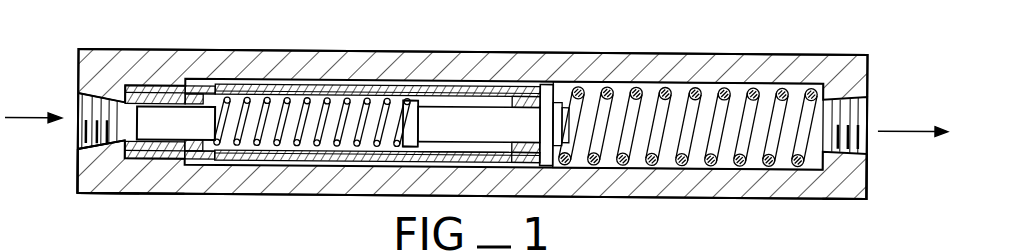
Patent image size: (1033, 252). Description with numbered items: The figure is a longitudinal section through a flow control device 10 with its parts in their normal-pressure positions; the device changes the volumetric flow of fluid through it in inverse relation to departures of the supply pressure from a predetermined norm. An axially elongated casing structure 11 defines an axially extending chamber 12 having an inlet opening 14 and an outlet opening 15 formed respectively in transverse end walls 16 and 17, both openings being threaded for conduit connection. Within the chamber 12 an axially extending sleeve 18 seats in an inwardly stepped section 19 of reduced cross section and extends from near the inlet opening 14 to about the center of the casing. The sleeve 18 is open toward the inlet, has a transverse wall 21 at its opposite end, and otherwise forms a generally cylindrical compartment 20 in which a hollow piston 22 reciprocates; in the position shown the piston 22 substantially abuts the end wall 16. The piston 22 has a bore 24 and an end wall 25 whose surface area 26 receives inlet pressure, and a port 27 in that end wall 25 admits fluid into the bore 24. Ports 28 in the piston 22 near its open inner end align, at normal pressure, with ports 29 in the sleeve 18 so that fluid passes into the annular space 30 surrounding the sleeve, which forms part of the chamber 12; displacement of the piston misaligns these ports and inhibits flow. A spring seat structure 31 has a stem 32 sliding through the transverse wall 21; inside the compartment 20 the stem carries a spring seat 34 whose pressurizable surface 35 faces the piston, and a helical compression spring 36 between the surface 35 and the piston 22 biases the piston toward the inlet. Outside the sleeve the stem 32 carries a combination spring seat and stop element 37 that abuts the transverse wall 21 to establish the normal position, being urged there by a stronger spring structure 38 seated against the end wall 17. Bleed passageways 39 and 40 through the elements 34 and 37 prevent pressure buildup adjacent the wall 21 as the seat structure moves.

The flow control device 10 is at (727, 52).
The casing structure 11 is at (614, 53).
The chamber 12 is at (797, 90).
The inlet opening 14 is at (83, 132).
The outlet opening 15 is at (862, 133).
The end wall 16 is at (93, 163).
The end wall 17 is at (856, 177).
The sleeve 18 is at (338, 88).
The stepped section 19 is at (150, 85).
The compartment 20 is at (496, 145).
The transverse wall 21 is at (532, 165).
The piston 22 is at (141, 92).
The bore 24 is at (163, 125).
The end wall 25 is at (110, 186).
The surface area 26 is at (112, 100).
The port 27 is at (128, 118).
The ports 28 is at (197, 147).
The ports 29 is at (195, 155).
The annular space 30 is at (245, 83).
The spring seat structure 31 is at (447, 137).
The stem 32 is at (513, 122).
The spring seat 34 is at (412, 128).
The pressurizable surface 35 is at (412, 128).
The helical compression spring 36 is at (286, 100).
The combination spring seat and stop element 37 is at (552, 160).
The spring structure 38 is at (697, 92).
The bleed passageway 39 is at (413, 98).
The bleed passageway 40 is at (555, 72).